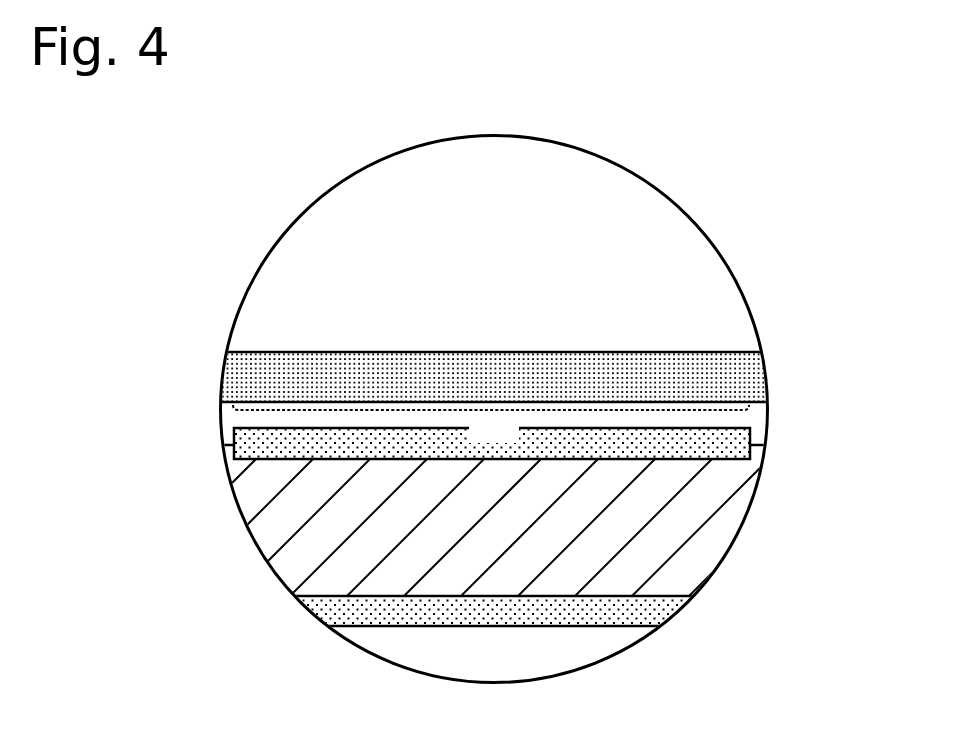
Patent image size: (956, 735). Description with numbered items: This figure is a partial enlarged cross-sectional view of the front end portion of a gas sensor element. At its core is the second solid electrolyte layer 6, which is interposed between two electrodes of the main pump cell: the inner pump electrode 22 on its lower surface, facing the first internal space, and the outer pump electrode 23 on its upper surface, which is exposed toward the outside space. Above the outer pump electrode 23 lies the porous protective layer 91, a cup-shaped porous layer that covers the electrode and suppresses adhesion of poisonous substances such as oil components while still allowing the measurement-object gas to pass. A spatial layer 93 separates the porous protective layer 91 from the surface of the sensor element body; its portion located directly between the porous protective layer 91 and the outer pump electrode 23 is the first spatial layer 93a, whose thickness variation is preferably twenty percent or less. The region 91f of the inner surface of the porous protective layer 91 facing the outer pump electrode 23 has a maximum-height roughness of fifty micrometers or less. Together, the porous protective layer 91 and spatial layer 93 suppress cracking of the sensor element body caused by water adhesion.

The second solid electrolyte layer 6 is at (663, 528).
The inner pump electrode 22 is at (489, 607).
The outer pump electrode 23 is at (725, 437).
The porous protective layer 91 is at (478, 371).
The region of the inner surface of the porous protective layer 91f is at (491, 413).
The spatial layer 93 is at (755, 417).
The first spatial layer 93a is at (588, 418).